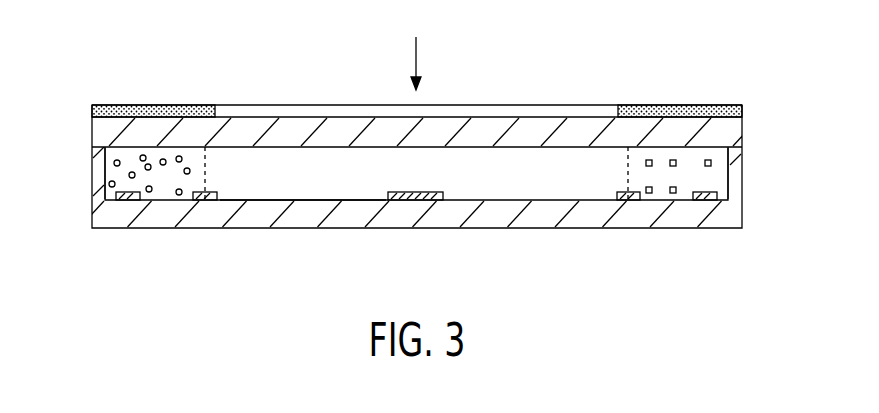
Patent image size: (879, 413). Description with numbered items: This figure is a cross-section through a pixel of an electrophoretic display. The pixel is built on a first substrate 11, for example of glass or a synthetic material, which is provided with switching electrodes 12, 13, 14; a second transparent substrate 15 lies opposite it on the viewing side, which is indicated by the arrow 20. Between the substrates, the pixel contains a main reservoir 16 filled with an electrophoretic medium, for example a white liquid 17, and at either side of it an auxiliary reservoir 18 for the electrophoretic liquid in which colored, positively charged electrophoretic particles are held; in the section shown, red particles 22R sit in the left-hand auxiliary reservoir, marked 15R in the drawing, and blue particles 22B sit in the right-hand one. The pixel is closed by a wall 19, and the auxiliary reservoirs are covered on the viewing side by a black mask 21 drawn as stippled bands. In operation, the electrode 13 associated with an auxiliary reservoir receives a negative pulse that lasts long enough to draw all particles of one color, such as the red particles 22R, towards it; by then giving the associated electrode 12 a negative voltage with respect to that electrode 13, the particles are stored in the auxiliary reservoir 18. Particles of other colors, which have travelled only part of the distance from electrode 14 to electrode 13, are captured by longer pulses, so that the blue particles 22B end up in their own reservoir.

The first substrate 11 is at (337, 218).
The switching electrode 12 is at (123, 198).
The switching electrode 13 is at (208, 198).
The switching electrode 14 is at (410, 200).
The second transparent substrate 15 is at (578, 130).
The red display region 15R is at (168, 185).
The main reservoir 16 is at (525, 165).
The white liquid 17 is at (283, 177).
The auxiliary reservoir 18 is at (139, 165).
The wall 19 is at (735, 175).
The arrow 20 is at (417, 55).
The black mask 21 is at (127, 105).
The red particles 22R is at (108, 184).
The blue particles 22B is at (665, 185).